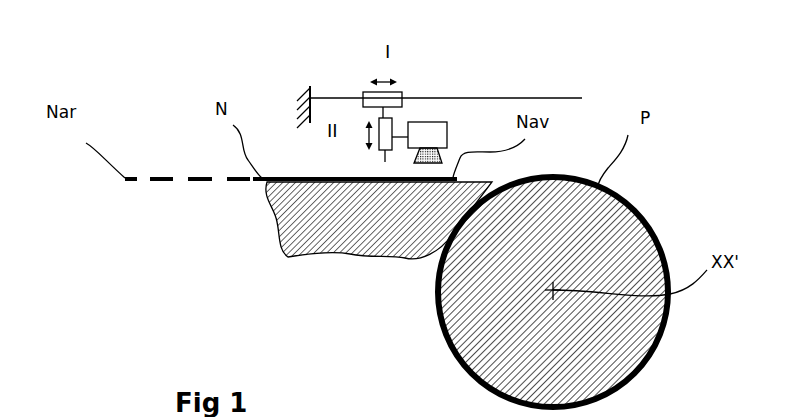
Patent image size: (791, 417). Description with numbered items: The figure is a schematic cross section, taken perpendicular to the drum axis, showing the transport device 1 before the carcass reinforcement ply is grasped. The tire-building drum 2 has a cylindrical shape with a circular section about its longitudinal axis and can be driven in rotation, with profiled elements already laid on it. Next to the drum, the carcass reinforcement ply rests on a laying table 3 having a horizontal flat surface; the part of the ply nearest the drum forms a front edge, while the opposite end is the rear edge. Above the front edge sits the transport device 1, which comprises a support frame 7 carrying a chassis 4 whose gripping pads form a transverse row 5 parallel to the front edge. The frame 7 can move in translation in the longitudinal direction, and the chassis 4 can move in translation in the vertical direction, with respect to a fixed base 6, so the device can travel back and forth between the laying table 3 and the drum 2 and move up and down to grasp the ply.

The transport device 1 is at (418, 104).
The tire-building drum 2 is at (468, 346).
The laying table 3 is at (296, 253).
The chassis 4 is at (437, 122).
The transverse row 5 is at (440, 150).
The fixed base 6 is at (305, 95).
The support frame 7 is at (380, 115).